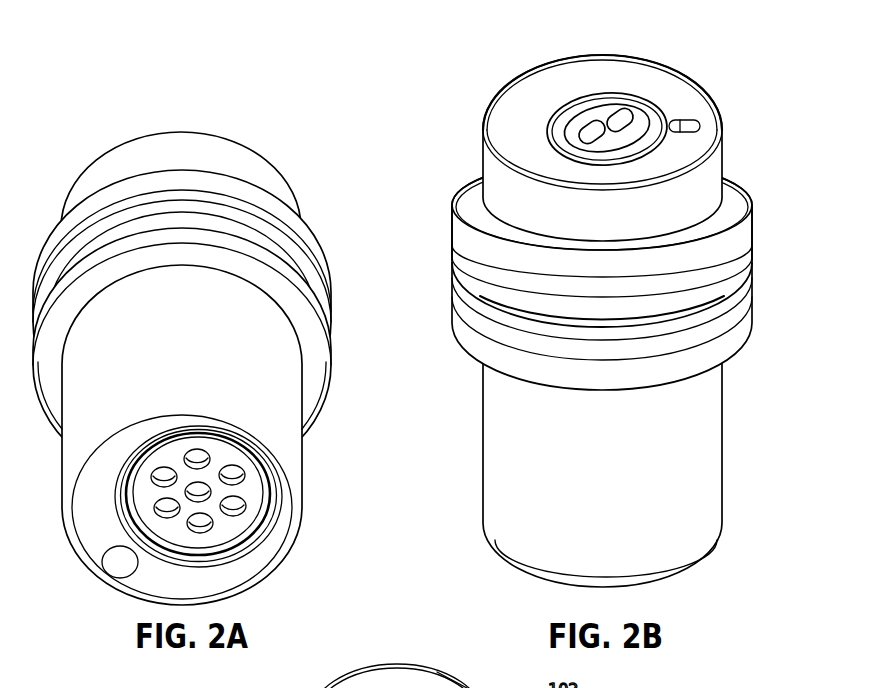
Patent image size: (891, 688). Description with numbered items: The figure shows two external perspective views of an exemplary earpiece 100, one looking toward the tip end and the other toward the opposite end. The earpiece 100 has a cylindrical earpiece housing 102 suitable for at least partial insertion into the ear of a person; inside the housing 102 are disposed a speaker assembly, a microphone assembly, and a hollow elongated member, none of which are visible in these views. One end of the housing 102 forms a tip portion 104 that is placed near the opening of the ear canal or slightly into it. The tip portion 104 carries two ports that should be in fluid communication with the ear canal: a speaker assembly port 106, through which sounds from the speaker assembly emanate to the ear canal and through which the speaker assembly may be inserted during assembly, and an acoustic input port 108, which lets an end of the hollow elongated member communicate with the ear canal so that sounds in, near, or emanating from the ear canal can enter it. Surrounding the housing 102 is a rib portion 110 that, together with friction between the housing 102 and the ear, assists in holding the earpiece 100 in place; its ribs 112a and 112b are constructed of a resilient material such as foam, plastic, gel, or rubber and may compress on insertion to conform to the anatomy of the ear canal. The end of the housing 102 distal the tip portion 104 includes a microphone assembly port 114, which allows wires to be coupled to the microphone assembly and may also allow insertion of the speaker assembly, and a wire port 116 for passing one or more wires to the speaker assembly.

In FIG. 2A, the earpiece 100 is at (208, 322).
In FIG. 2B, the earpiece 100 is at (612, 310).
In FIG. 2A, the earpiece housing 102 is at (133, 143).
In FIG. 2B, the earpiece housing 102 is at (602, 148).
In FIG. 2B, the tip portion 104 is at (793, 343).
In FIG. 2A, the speaker assembly port 106 is at (267, 490).
In FIG. 2A, the acoustic input port 108 is at (107, 566).
In FIG. 2B, the rib portion 110 is at (612, 272).
In FIG. 2A, the rib 112a is at (303, 218).
In FIG. 2B, the rib 112a is at (463, 192).
In FIG. 2A, the rib 112b is at (330, 373).
In FIG. 2B, the rib 112b is at (455, 297).
In FIG. 2B, the microphone assembly port 114 is at (557, 108).
In FIG. 2B, the wire port 116 is at (690, 118).